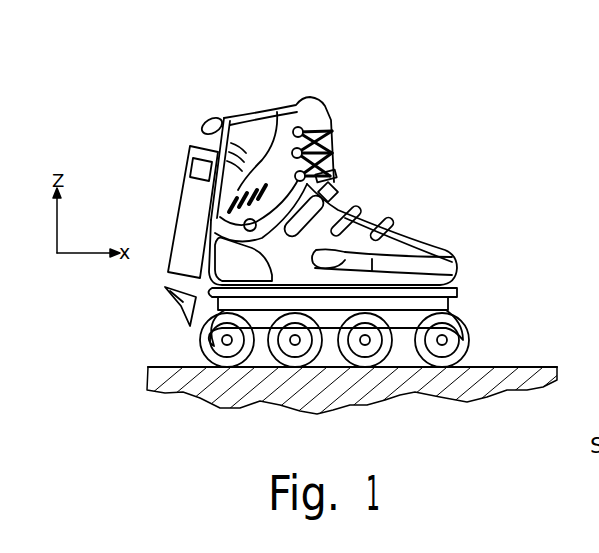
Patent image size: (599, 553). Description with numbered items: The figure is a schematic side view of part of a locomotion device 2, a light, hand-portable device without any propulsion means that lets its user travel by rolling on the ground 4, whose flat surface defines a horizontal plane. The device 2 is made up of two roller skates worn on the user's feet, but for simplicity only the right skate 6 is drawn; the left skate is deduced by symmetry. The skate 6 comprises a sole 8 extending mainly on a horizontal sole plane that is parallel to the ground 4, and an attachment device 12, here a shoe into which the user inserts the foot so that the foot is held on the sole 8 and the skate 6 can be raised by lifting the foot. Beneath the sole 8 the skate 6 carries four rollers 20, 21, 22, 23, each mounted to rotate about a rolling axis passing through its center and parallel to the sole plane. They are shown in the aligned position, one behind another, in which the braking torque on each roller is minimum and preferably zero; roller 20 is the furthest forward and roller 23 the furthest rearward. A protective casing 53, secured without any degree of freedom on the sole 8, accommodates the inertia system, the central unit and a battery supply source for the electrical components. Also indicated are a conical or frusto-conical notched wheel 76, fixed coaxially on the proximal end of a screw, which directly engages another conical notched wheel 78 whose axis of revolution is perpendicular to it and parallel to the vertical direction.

The locomotion device 2 is at (112, 54).
The ground 4 is at (152, 366).
The right skate 6 is at (448, 75).
The sole 8 is at (455, 289).
The attachment device 12 is at (348, 152).
The roller 20 is at (468, 340).
The roller 21 is at (385, 352).
The roller 22 is at (290, 357).
The roller 23 is at (223, 360).
The protective casing 53 is at (176, 162).
The conical notched wheel 76 is at (176, 304).
The conical notched wheel 78 is at (165, 288).